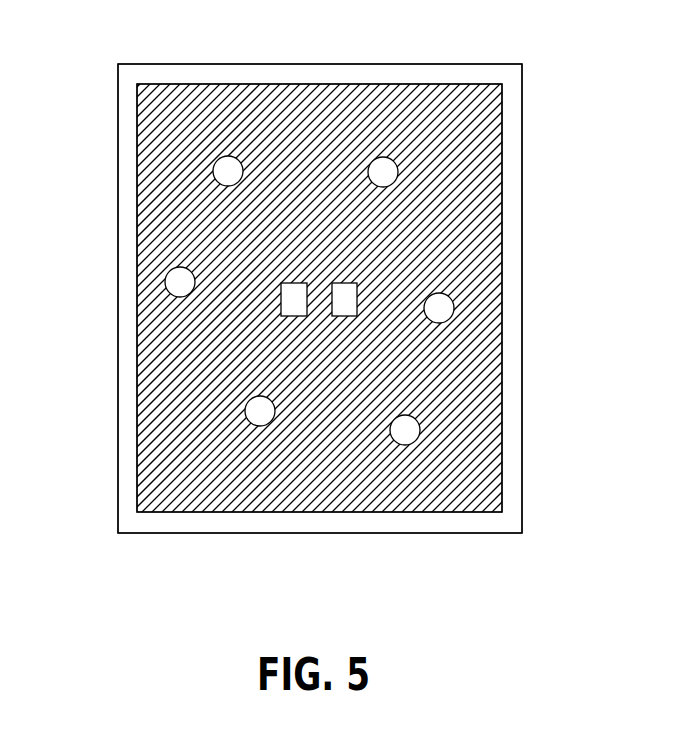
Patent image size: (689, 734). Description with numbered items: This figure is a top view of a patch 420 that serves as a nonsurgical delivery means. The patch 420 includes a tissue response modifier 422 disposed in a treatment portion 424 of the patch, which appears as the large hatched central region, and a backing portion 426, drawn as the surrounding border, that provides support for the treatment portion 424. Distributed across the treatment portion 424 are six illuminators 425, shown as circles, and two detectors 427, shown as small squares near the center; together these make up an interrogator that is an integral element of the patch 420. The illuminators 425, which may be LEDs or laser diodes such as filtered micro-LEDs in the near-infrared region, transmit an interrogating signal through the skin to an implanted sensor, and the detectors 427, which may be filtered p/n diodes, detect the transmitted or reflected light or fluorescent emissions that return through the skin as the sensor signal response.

The patch 420 is at (96, 88).
The tissue response modifier 422 is at (197, 118).
The treatment portion 424 is at (267, 118).
The illuminators 425 is at (384, 172).
The backing portion 426 is at (127, 312).
The detectors 427 is at (292, 302).